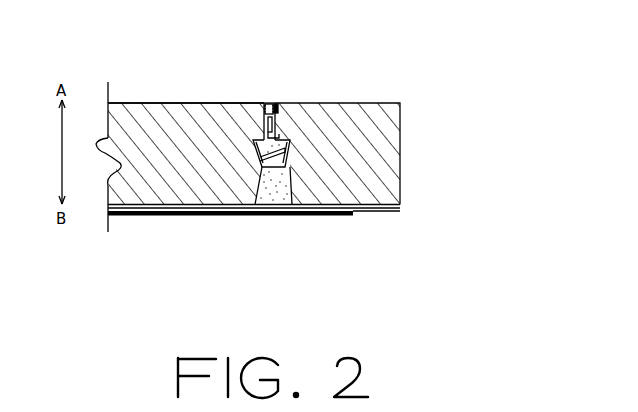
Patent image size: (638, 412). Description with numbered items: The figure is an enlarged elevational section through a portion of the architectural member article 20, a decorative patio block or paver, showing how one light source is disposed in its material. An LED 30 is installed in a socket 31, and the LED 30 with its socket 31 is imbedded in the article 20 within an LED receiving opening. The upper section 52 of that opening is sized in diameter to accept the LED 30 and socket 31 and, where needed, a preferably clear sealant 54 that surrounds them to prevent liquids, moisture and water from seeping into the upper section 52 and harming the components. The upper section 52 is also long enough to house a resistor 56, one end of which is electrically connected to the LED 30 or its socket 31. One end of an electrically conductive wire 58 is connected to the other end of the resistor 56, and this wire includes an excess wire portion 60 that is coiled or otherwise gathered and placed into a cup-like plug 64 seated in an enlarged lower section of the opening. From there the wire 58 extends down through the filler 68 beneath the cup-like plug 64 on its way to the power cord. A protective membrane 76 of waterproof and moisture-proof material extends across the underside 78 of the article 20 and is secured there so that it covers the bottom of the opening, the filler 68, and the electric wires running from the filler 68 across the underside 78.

The architectural member article 20 is at (179, 101).
The socket 31 is at (266, 102).
The upper section of opening 52 is at (261, 103).
The LED 30 is at (270, 102).
The sealant 54 is at (275, 105).
The resistor 56 is at (277, 119).
The electrically conductive wire 58 is at (279, 136).
The excess wire portion 60 is at (289, 148).
The cup-like plug 64 is at (287, 158).
The filler 68 is at (283, 186).
The protective membrane 76 is at (240, 208).
The underside of article 78 is at (377, 212).